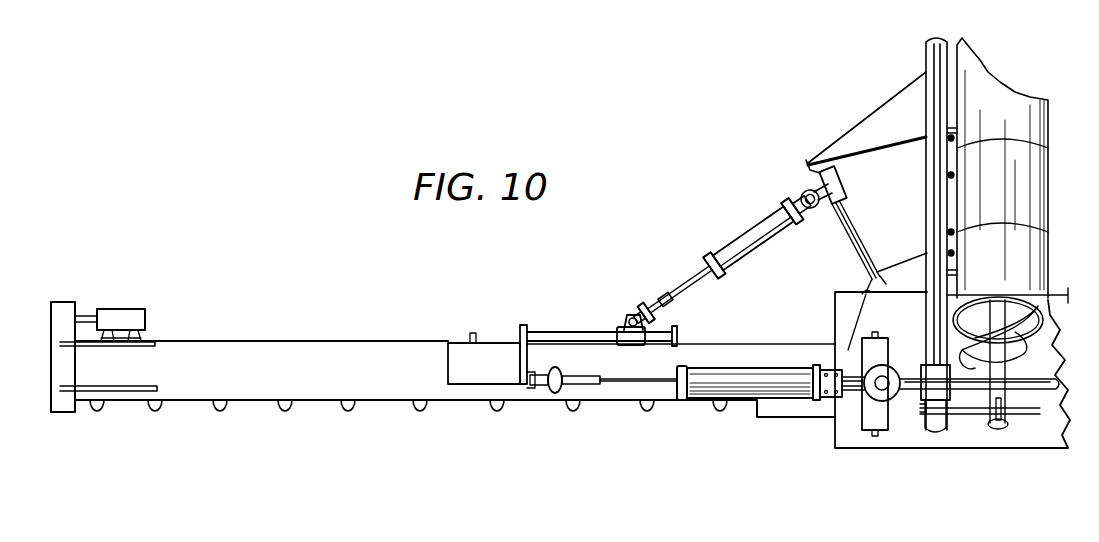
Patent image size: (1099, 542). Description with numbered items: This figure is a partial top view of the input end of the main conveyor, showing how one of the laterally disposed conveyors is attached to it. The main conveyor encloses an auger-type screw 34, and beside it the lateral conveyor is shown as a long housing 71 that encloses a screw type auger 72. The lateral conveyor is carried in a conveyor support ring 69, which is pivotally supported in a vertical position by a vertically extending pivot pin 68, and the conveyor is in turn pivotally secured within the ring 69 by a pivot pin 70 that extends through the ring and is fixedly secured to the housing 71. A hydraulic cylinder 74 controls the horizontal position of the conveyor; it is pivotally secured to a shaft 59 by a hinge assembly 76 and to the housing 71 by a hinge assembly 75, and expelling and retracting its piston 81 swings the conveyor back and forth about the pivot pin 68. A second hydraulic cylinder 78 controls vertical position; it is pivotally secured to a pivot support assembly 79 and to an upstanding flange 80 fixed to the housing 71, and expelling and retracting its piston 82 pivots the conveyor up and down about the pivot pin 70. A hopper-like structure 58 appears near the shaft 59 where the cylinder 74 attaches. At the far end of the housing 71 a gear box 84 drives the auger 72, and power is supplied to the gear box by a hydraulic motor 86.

The auger-type screw 34 is at (1008, 358).
The hopper 58 is at (878, 118).
The shafts 59 is at (853, 228).
The pivot pins 68 is at (889, 392).
The conveyor support rings 69 is at (858, 428).
The pivot pins 70 is at (872, 437).
The housing 71 is at (490, 352).
The screw type augers 72 is at (415, 407).
The hydraulic cylinders 74 is at (760, 230).
The hinge assemblies 75 is at (632, 316).
The hinge assemblies 76 is at (810, 193).
The hydraulic cylinders 78 is at (745, 388).
The pivot support assemblies 79 is at (830, 388).
The upstanding flanges 80 is at (527, 395).
The pistons 81 is at (690, 278).
The pistons 82 is at (621, 386).
The gear box 84 is at (66, 303).
The hydraulic motors 86 is at (145, 318).